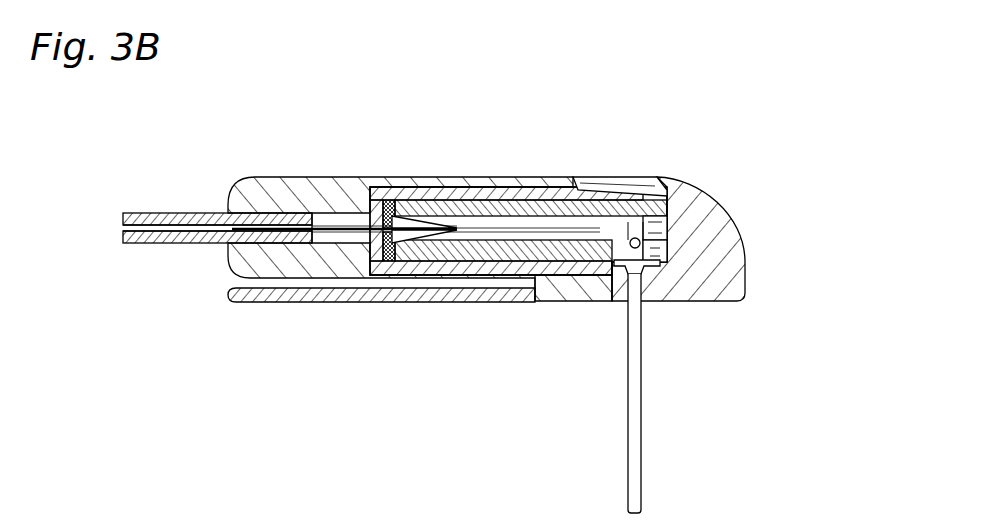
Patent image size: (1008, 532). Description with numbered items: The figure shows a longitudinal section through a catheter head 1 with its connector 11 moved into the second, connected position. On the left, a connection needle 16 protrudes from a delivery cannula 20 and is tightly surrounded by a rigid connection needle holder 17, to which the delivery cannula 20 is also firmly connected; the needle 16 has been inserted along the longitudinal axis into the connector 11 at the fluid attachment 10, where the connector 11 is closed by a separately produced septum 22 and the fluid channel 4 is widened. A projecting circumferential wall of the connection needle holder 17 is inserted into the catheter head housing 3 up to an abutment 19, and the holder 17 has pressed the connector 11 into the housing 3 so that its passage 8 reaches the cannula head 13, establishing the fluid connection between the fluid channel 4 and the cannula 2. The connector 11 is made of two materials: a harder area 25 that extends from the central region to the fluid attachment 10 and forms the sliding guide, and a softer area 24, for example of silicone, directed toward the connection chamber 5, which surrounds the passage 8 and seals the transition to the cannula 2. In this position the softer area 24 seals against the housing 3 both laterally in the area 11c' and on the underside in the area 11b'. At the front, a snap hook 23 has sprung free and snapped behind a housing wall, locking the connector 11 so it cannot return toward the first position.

The catheter head 1 is at (776, 204).
The cannula 2 is at (642, 386).
The catheter head housing 3 is at (708, 277).
The fluid channel 4 is at (530, 230).
The connection chamber 5 is at (672, 223).
The passage 8 is at (580, 272).
The fluid attachment 10 is at (373, 200).
The connector 11 is at (538, 208).
The underside area of the connector 11b' is at (621, 316).
The lateral area of the connector 11c' is at (707, 225).
The cannula head 13 is at (657, 262).
The connection needle 16 is at (380, 242).
The connection needle holder 17 is at (282, 190).
The abutment 19 is at (532, 185).
The delivery cannula 20 is at (188, 238).
The septum 22 is at (378, 219).
The snap hook 23 is at (640, 195).
The softer area 24 is at (662, 237).
The harder area 25 is at (478, 250).